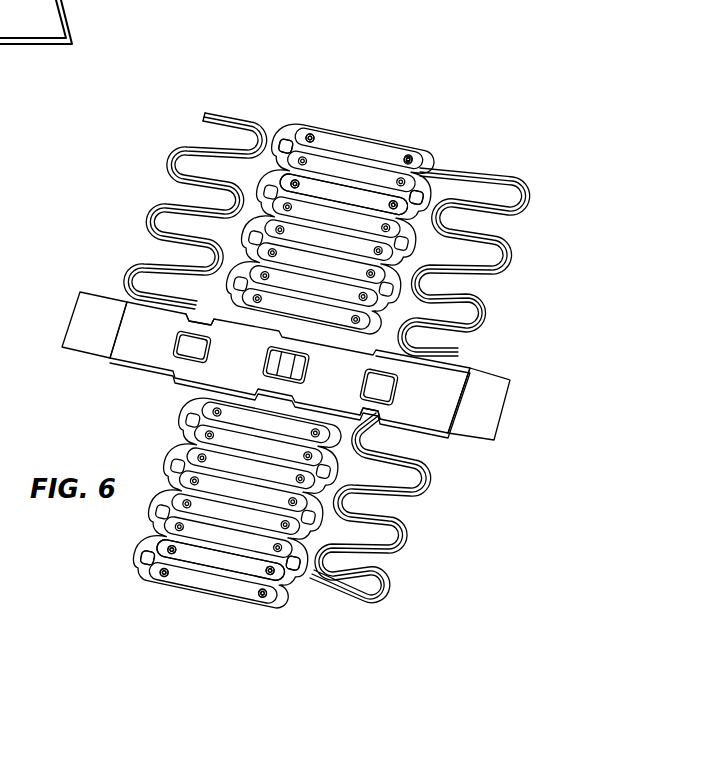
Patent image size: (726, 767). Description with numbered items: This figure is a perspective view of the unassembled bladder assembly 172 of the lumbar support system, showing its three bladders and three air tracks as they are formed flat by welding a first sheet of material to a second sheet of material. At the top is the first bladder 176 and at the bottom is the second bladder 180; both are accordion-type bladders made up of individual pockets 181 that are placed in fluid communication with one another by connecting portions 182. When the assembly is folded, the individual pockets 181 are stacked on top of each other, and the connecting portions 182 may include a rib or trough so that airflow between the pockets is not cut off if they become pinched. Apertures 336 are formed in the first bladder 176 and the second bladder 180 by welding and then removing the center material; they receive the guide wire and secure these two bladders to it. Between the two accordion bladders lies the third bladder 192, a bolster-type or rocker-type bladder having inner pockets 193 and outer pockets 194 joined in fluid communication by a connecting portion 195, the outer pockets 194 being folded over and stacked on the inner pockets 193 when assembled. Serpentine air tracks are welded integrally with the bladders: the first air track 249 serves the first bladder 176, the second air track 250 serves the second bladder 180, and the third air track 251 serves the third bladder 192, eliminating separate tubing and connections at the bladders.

The bladder assembly 172 is at (638, 146).
The first bladder 176 is at (349, 160).
The second bladder 180 is at (212, 583).
The individual pockets 181 is at (377, 207).
The connecting portions 182 is at (289, 133).
The apertures 336 is at (312, 133).
The first air track 249 is at (510, 178).
The second air track 250 is at (390, 600).
The third air track 251 is at (167, 167).
The third bladder 192 is at (175, 376).
The inner pockets 193 is at (223, 360).
The outer pockets 194 is at (120, 350).
The connecting portion 195 is at (205, 316).